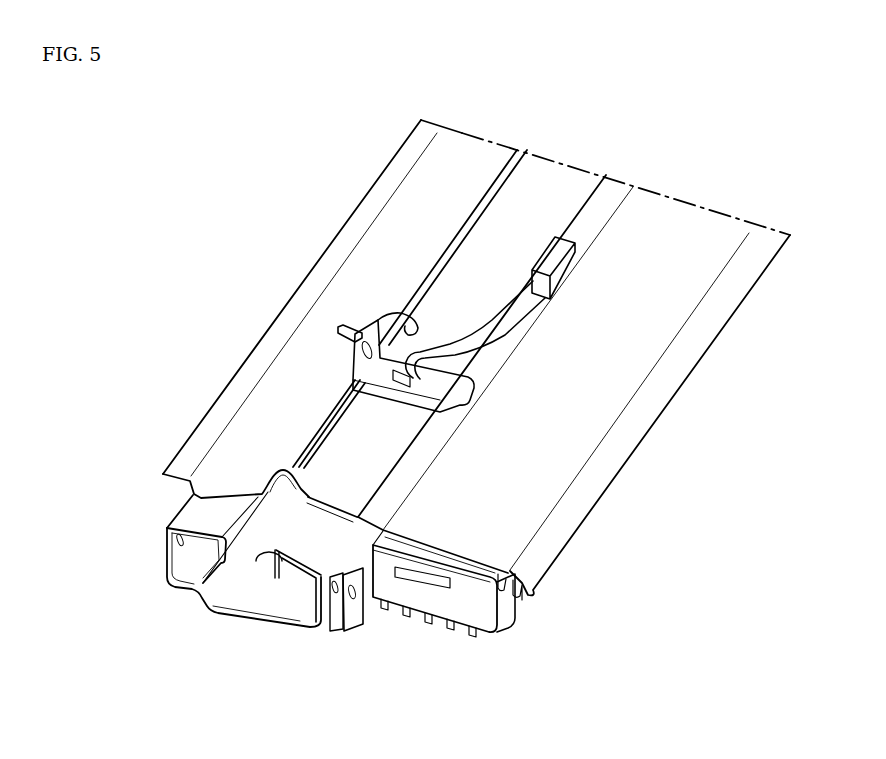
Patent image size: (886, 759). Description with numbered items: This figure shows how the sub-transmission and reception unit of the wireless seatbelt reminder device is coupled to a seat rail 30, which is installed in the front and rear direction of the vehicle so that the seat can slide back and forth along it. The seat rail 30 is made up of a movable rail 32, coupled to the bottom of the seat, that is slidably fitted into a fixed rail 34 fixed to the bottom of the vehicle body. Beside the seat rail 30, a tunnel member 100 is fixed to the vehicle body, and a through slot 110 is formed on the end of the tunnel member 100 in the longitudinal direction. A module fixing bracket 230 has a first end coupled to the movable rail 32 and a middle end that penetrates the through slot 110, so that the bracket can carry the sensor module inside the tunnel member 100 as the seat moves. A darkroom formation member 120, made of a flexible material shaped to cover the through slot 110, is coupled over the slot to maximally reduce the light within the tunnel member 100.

The seat rail 30 is at (350, 180).
The movable rail 32 is at (350, 268).
The fixed rail 34 is at (183, 561).
The tunnel member 100 is at (468, 606).
The through slot 110 is at (361, 630).
The darkroom formation member 120 is at (425, 450).
The module fixing bracket 230 is at (375, 378).